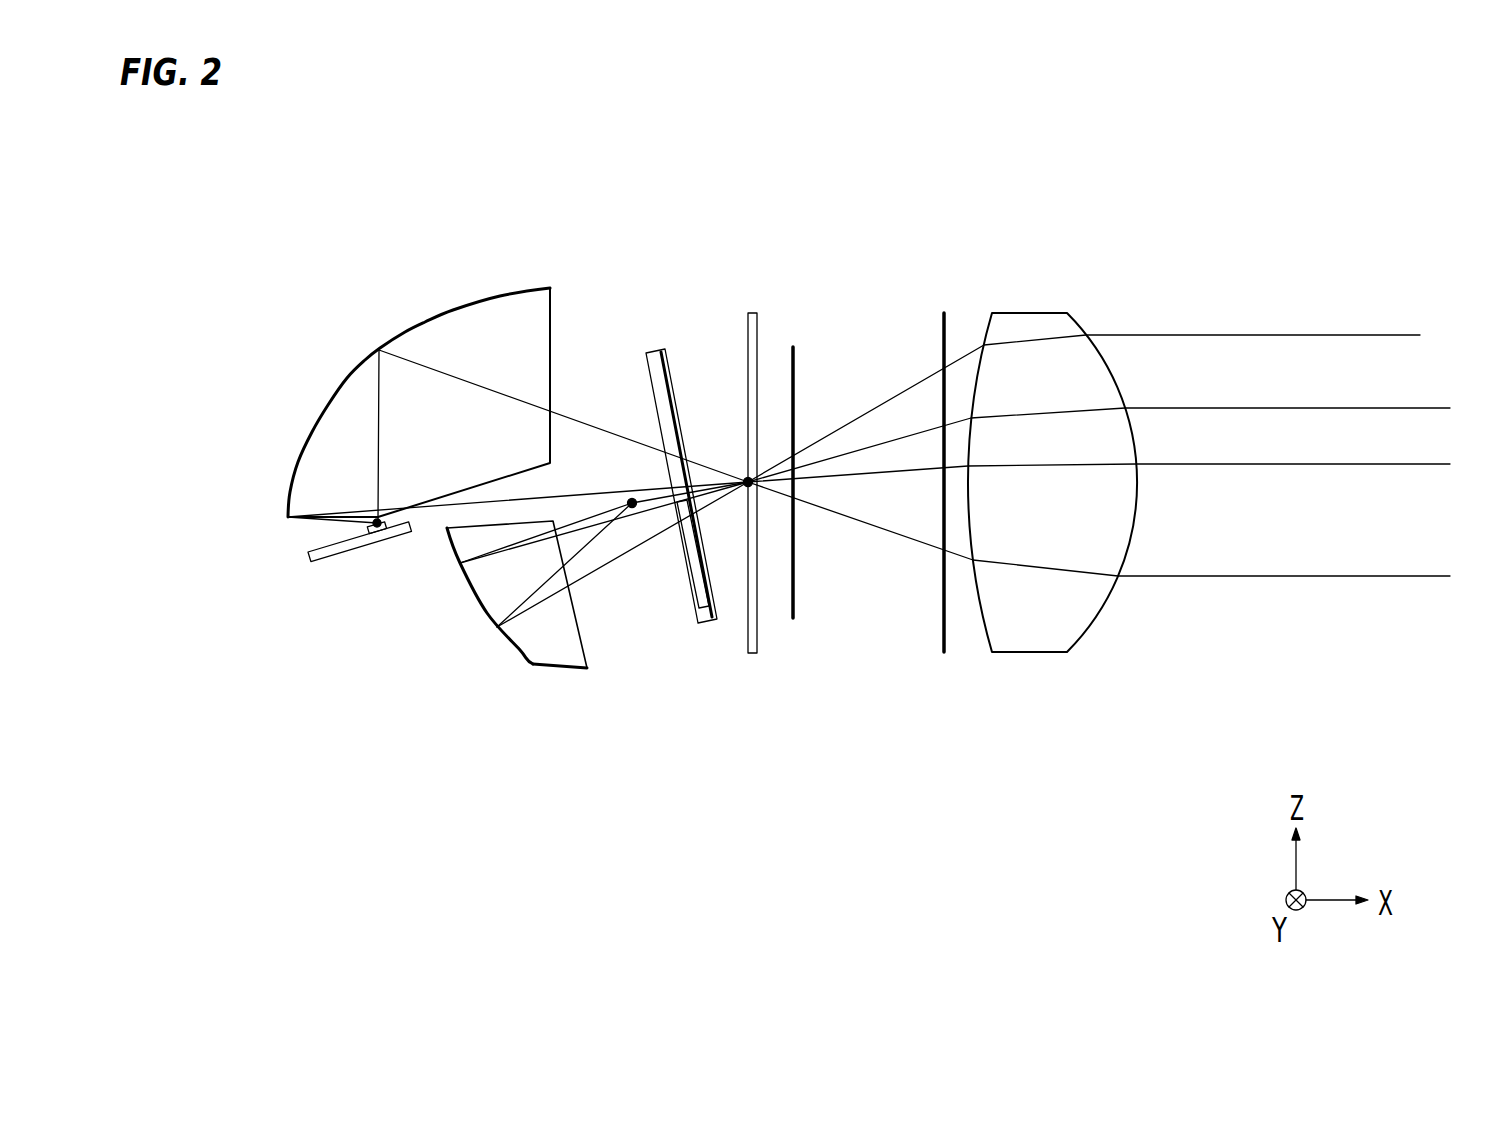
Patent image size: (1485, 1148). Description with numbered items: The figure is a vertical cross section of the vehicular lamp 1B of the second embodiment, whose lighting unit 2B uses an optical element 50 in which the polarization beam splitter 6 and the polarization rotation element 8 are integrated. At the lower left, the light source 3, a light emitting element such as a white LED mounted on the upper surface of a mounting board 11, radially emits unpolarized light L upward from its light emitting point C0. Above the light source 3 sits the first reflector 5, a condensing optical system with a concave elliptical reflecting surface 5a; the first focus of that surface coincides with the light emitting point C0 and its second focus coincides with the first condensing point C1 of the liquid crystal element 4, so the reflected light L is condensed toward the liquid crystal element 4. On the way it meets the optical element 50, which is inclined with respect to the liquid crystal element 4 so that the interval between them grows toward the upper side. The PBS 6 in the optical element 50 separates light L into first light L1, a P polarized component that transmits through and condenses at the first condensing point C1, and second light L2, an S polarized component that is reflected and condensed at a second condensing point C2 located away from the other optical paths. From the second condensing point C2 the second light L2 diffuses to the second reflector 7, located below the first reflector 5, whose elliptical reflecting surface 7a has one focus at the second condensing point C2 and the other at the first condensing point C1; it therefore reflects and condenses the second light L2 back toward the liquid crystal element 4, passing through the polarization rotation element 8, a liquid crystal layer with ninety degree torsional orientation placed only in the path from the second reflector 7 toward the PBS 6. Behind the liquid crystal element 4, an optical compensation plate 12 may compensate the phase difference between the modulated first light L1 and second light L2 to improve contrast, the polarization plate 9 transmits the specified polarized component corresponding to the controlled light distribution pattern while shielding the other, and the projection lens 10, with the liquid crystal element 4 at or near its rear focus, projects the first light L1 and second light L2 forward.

The vehicular lamp 1B is at (272, 144).
The lighting unit 2B is at (941, 176).
The light source 3 is at (321, 585).
The liquid crystal element 4 is at (758, 324).
The first reflector 5 is at (414, 372).
The elliptical reflecting surface 5a is at (434, 318).
The polarization beam splitter 6 is at (665, 358).
The second reflector 7 is at (490, 649).
The elliptical reflecting surface 7a is at (480, 586).
The polarization rotation element 8 is at (695, 604).
The polarization plate 9 is at (942, 641).
The projection lens 10 is at (1035, 679).
The mounting board 11 is at (330, 558).
The optical compensation plate 12 is at (796, 603).
The optical element 50 is at (664, 462).
The light emitting point C0 is at (377, 522).
The first condensing point C1 is at (746, 481).
The second condensing point C2 is at (633, 507).
The light L is at (598, 412).
The first light L1 is at (700, 452).
The second light L2 is at (662, 472).